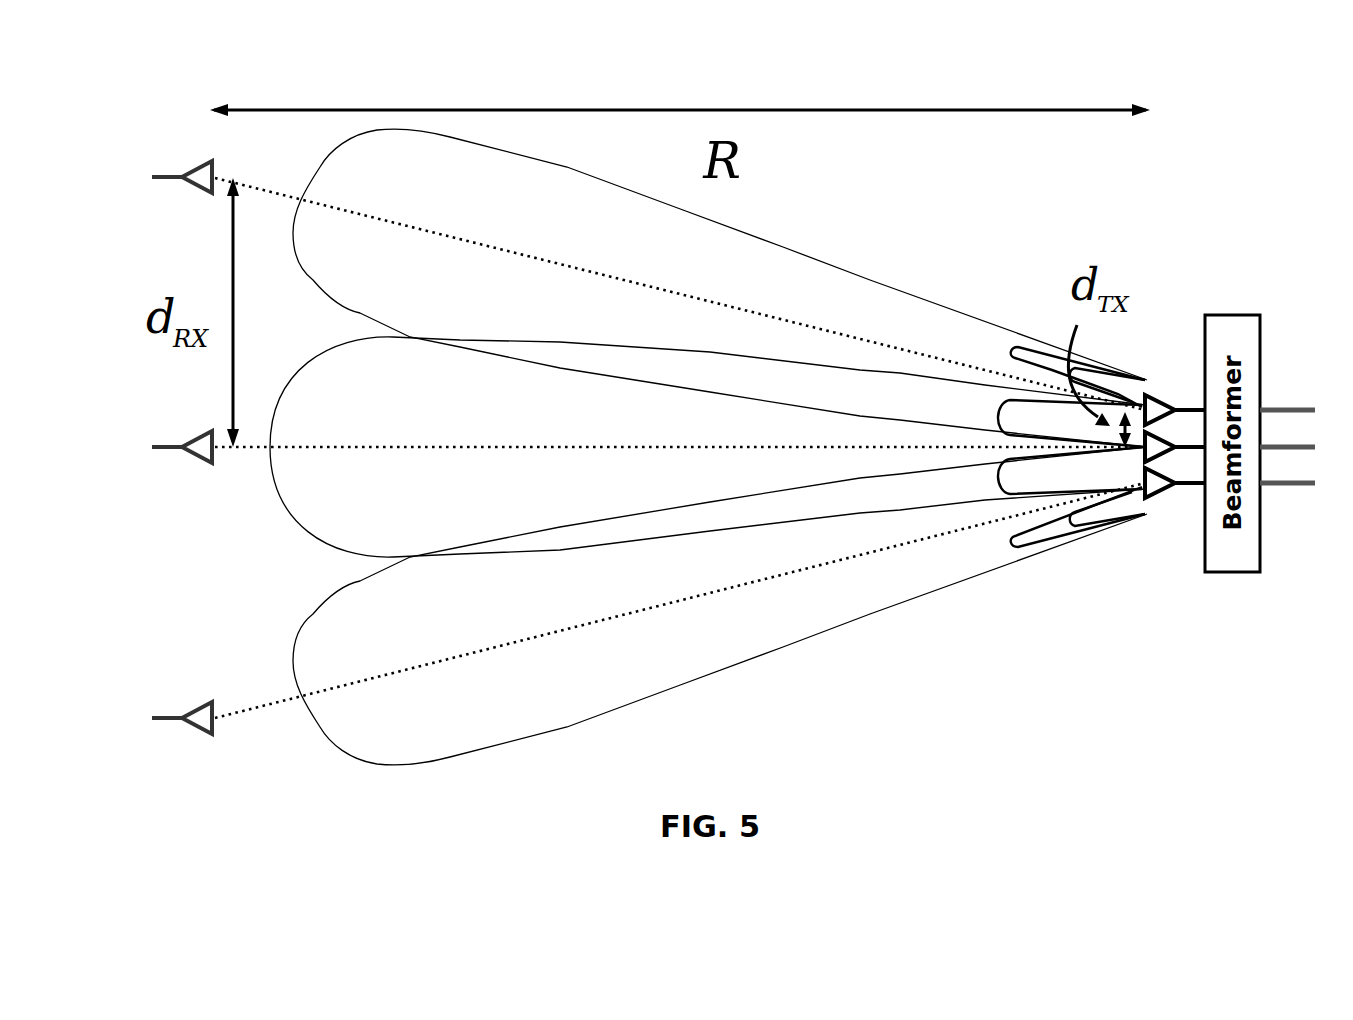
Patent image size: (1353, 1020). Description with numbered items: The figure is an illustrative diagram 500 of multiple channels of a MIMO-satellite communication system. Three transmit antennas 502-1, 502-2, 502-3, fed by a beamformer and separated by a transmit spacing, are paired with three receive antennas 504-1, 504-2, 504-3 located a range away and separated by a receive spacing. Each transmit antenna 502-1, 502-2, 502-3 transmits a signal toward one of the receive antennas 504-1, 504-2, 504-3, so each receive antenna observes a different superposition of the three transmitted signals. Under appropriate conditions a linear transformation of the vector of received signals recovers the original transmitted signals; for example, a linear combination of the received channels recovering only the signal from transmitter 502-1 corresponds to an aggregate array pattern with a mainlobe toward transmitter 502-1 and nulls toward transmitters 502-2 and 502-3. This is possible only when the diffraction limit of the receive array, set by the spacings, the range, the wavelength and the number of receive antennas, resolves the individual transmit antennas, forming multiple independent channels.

The radar antenna beam arrangement 500 is at (690, 61).
The transmit antenna 502-1 is at (1153, 393).
The transmit antenna 502-2 is at (1188, 455).
The transmit antenna 502-3 is at (1163, 497).
The receive antenna 504-1 is at (145, 177).
The receive antenna 504-2 is at (142, 447).
The receive antenna 504-3 is at (145, 718).